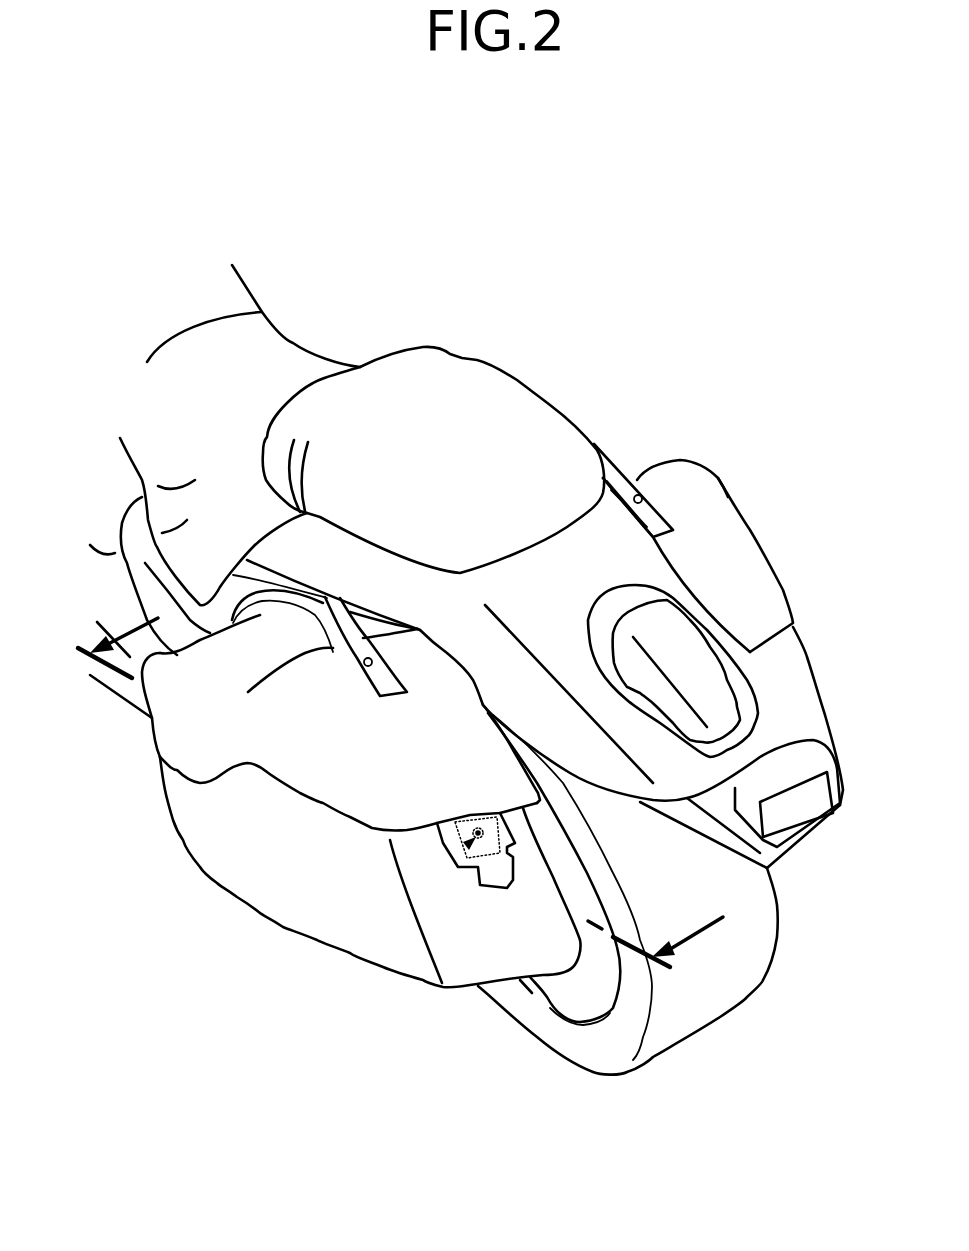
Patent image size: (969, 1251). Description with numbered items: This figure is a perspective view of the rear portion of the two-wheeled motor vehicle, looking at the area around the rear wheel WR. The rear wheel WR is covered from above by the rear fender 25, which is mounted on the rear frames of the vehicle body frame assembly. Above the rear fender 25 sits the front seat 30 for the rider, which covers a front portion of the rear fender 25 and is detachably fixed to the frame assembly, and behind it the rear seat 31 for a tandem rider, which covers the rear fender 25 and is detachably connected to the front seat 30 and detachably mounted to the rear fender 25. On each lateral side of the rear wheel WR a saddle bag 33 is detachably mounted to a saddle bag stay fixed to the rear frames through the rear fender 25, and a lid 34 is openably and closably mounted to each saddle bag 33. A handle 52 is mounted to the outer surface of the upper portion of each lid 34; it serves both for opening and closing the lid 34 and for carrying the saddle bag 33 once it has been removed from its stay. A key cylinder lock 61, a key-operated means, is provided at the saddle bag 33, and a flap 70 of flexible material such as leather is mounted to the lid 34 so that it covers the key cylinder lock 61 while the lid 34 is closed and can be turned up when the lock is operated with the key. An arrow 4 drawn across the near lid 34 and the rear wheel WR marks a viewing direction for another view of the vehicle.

The front seat 30 is at (292, 355).
The rear seat 31 is at (515, 410).
The handle 52 is at (618, 473).
The lid 34 is at (717, 507).
The rear fender 25 is at (650, 575).
The saddle bag 33 is at (797, 677).
The key cylinder lock 61 is at (477, 842).
The flap 70 is at (495, 873).
The rear wheel WR is at (603, 1053).
The section line of FIG. 4 is at (388, 816).